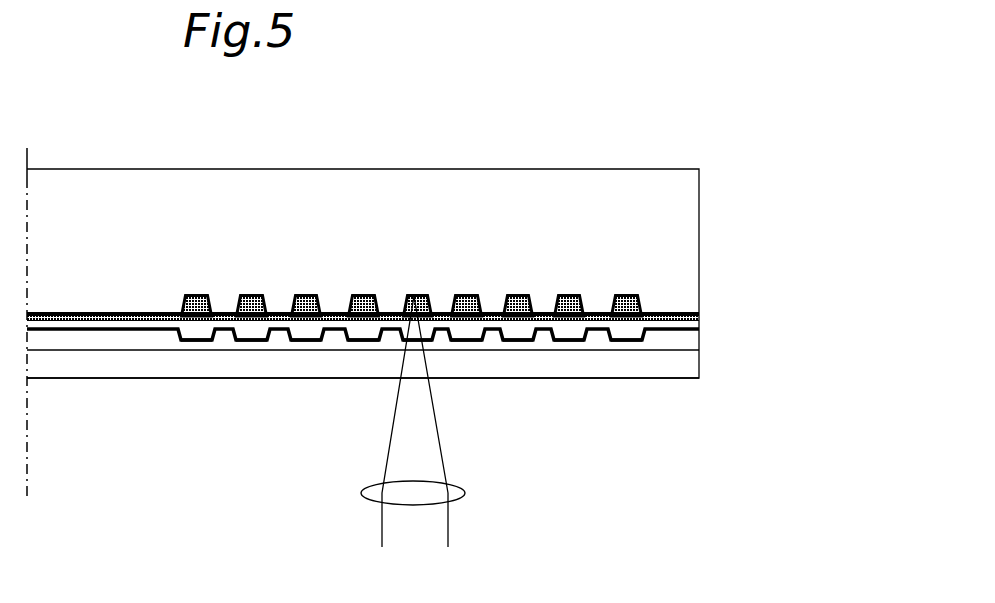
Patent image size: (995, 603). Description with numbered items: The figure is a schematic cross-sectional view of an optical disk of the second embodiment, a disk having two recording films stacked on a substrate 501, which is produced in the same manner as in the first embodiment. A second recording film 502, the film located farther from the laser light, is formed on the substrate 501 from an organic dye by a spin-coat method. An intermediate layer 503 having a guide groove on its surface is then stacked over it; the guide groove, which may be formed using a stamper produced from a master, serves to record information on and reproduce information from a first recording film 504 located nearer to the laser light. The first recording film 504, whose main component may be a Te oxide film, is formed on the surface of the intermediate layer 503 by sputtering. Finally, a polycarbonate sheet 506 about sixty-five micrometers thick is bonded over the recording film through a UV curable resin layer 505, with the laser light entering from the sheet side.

The substrate 501 is at (590, 248).
The second recording film 502 is at (647, 302).
The intermediate layer 503 is at (623, 330).
The first recording film 504 is at (643, 342).
The UV curable resin layer 505 is at (595, 345).
The polycarbonate sheet 506 is at (483, 368).